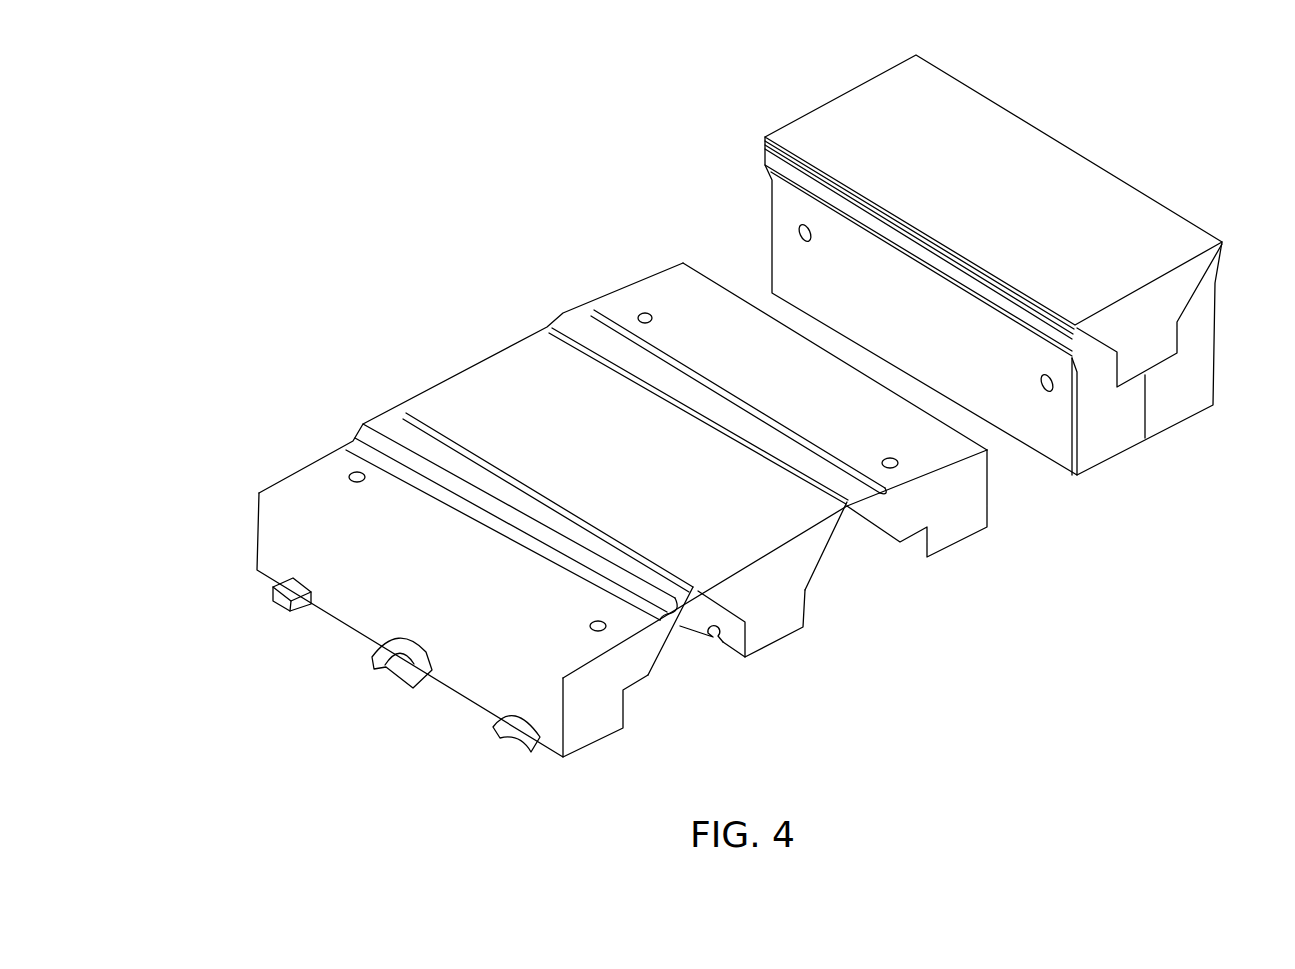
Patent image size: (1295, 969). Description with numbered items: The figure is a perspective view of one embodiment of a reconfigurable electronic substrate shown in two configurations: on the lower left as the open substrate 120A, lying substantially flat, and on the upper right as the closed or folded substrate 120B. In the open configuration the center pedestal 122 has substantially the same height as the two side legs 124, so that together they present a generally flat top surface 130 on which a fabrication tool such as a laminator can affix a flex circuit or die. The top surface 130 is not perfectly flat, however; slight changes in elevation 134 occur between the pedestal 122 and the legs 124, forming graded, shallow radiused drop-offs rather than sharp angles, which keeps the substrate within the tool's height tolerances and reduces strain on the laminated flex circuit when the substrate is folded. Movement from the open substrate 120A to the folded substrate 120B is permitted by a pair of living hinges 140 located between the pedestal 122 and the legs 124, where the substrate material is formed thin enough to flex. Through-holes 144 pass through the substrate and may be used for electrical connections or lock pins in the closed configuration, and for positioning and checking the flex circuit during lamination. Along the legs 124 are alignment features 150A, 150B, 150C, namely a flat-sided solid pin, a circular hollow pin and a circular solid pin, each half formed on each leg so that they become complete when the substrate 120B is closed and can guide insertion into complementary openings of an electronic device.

The substrate in open configuration 120A is at (600, 490).
The substrate in closed configuration 120B is at (1155, 104).
The center pedestal 122 is at (786, 627).
The side legs 124 is at (605, 729).
The top surface 130 is at (660, 472).
The changes in elevation 134 is at (566, 302).
The living hinges 140 is at (683, 614).
The through-holes 144 is at (348, 470).
The alignment feature 150A is at (275, 598).
The alignment feature 150B is at (388, 661).
The alignment feature 150C is at (500, 740).